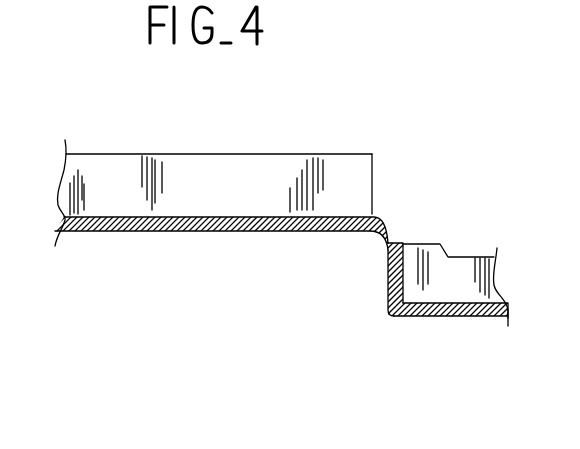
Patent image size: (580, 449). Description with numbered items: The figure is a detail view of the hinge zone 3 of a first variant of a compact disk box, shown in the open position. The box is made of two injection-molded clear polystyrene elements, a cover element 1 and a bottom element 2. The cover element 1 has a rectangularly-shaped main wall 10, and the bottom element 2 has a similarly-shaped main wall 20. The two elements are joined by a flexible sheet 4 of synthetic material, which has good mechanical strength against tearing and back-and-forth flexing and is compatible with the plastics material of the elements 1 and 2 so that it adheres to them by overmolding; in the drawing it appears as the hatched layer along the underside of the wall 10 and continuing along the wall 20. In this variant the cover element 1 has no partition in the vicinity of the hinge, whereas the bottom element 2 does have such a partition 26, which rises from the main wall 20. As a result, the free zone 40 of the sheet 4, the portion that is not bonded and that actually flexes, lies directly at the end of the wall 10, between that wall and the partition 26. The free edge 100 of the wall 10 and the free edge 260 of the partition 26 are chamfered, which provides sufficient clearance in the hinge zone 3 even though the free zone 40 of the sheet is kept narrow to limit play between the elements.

The cover element 1 is at (242, 148).
The main wall 10 is at (150, 235).
The free edge 100 is at (378, 222).
The flexible sheet 4 is at (290, 265).
The hinge zone 3 is at (369, 247).
The free zone 40 is at (290, 256).
The partition 26 is at (384, 300).
The main wall 20 is at (455, 317).
The free edge 260 is at (403, 244).
The bottom element 2 is at (469, 236).